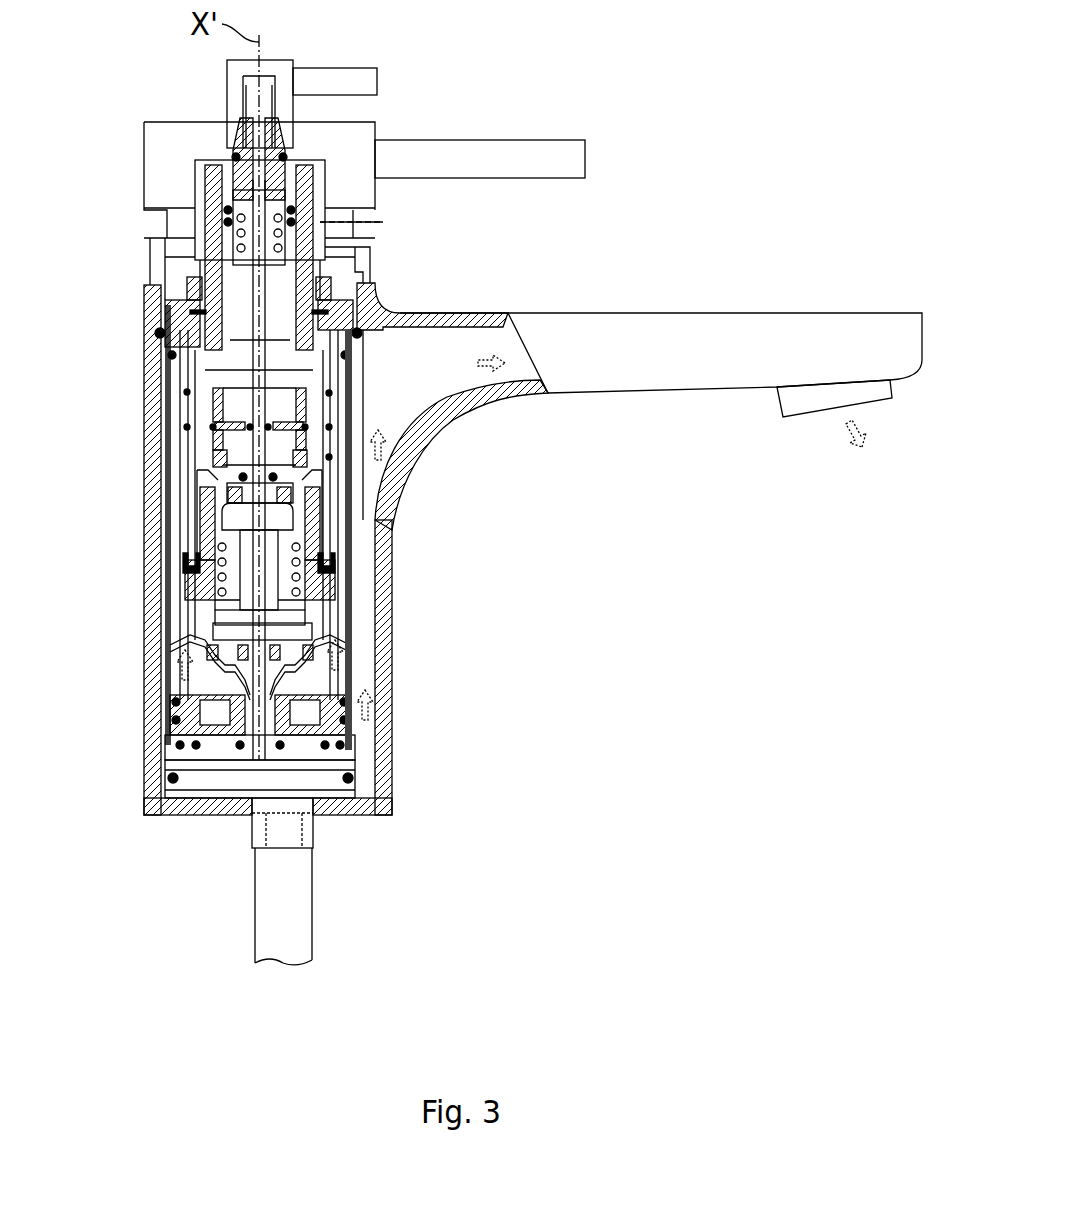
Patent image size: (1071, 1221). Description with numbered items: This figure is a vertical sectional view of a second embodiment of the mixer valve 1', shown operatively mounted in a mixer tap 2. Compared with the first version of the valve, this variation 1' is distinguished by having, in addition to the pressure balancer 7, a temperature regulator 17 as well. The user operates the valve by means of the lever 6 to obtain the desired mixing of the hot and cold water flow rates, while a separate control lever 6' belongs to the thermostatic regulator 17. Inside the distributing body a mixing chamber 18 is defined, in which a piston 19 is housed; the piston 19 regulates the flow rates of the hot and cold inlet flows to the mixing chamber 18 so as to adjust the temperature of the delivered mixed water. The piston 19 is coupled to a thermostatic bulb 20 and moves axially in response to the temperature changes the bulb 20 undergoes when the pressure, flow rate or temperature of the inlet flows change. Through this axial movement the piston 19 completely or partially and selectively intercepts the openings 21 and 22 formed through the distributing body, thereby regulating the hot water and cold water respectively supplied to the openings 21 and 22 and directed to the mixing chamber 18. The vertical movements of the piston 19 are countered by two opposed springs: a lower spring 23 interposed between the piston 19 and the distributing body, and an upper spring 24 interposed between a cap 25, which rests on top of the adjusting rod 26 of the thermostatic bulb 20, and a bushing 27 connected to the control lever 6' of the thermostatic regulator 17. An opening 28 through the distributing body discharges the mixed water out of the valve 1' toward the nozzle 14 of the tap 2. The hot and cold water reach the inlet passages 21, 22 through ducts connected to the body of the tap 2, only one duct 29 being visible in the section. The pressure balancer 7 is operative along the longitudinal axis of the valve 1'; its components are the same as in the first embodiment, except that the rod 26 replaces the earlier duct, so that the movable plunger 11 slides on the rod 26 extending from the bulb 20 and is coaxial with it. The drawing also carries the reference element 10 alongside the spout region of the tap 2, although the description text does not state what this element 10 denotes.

The mixer valve 1' is at (426, 540).
The tap 2 is at (426, 312).
The lever 6 is at (486, 125).
The control lever 6' is at (371, 51).
The pressure balancer 7 is at (217, 413).
The outlet channel 10 is at (303, 413).
The movable plunger 11 is at (220, 443).
The nozzle 14 is at (790, 405).
The temperature regulator 17 is at (243, 590).
The mixing chamber 18 is at (210, 630).
The piston 19 is at (197, 542).
The thermostatic bulb 20 is at (273, 568).
The opening 21 is at (315, 520).
The opening 22 is at (200, 547).
The lower spring 23 is at (312, 588).
The upper spring 24 is at (232, 272).
The cap 25 is at (195, 280).
The adjusting rod 26 is at (222, 368).
The bushing 27 is at (232, 182).
The opening 28 is at (248, 740).
The duct 29 is at (293, 888).